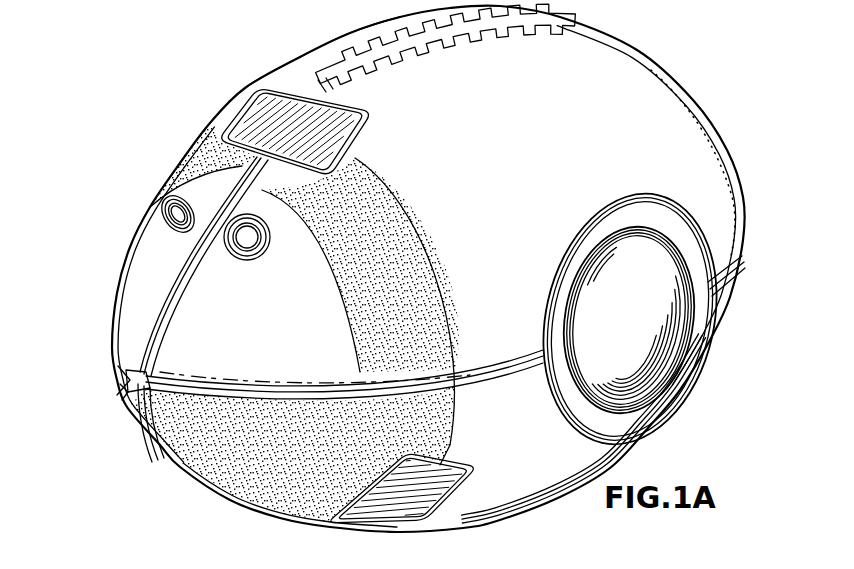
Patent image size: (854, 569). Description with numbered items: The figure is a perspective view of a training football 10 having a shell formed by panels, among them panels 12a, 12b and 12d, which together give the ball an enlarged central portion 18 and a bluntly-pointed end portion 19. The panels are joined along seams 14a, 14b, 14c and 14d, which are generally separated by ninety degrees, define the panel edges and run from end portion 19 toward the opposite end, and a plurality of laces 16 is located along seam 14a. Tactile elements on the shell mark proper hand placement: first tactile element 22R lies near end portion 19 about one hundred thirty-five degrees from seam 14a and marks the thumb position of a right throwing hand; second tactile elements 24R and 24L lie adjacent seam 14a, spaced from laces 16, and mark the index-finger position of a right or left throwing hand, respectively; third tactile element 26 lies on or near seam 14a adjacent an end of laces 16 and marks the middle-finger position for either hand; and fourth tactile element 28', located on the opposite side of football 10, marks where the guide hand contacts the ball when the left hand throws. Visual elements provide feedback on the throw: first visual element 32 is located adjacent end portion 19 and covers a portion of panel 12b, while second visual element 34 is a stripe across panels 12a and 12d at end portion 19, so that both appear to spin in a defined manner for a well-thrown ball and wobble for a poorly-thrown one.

The football 10 is at (176, 125).
The panel 12a is at (633, 67).
The panel 12b is at (507, 490).
The panel 12d is at (300, 58).
The seam 14a is at (157, 320).
The seam 14b is at (277, 393).
The seam 14c is at (137, 423).
The seam 14d is at (125, 376).
The laces 16 is at (450, 30).
The central portion 18 is at (553, 143).
The end portion 19 is at (120, 387).
The first tactile element 22R is at (380, 513).
The second tactile element 24L is at (243, 243).
The second tactile element 24R is at (173, 217).
The third tactile element 26 is at (265, 104).
The fourth tactile element 28' is at (630, 319).
The first visual element 32 is at (227, 473).
The second visual element 34 is at (410, 252).